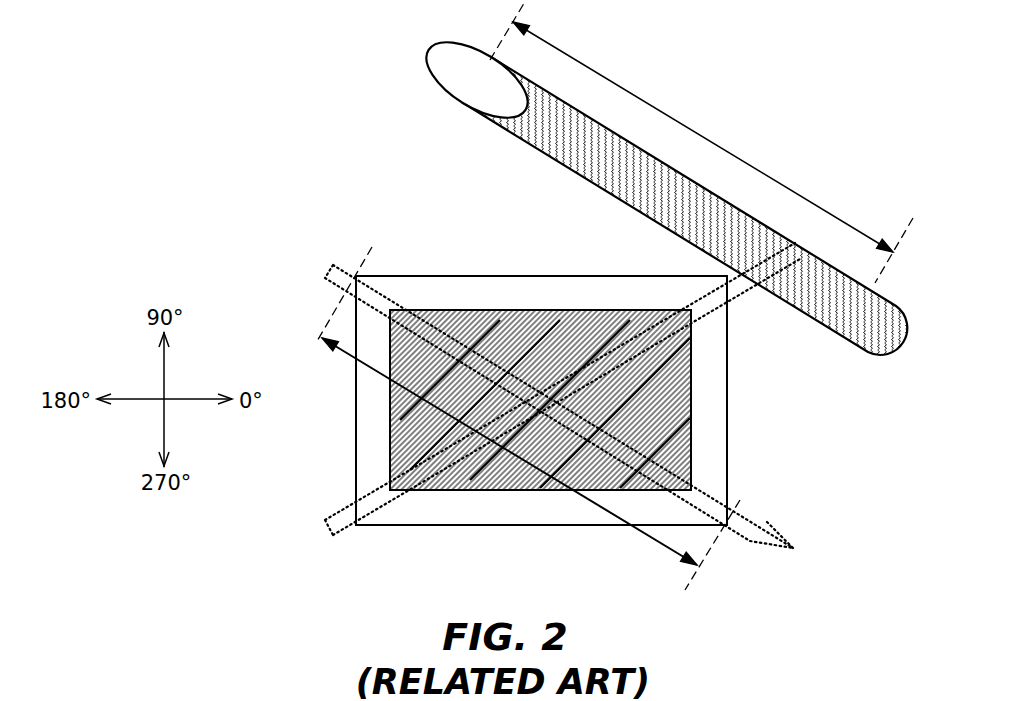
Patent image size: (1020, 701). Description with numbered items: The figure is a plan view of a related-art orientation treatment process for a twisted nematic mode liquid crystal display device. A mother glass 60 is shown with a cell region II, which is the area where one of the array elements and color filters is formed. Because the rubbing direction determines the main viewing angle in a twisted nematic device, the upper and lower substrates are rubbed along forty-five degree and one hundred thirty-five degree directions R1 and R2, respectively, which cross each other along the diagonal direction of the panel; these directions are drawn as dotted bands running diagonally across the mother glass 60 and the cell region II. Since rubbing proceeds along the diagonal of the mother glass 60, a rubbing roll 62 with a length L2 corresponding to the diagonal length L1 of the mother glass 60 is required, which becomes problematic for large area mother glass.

The mother glass 60 is at (388, 276).
The rubbing roll 62 is at (882, 352).
The cell region II is at (463, 310).
The 45° rubbing direction R1 is at (742, 290).
The 135° rubbing direction R2 is at (748, 518).
The diagonal length of the mother glass L1 is at (528, 418).
The length of the rubbing roll L2 is at (701, 141).